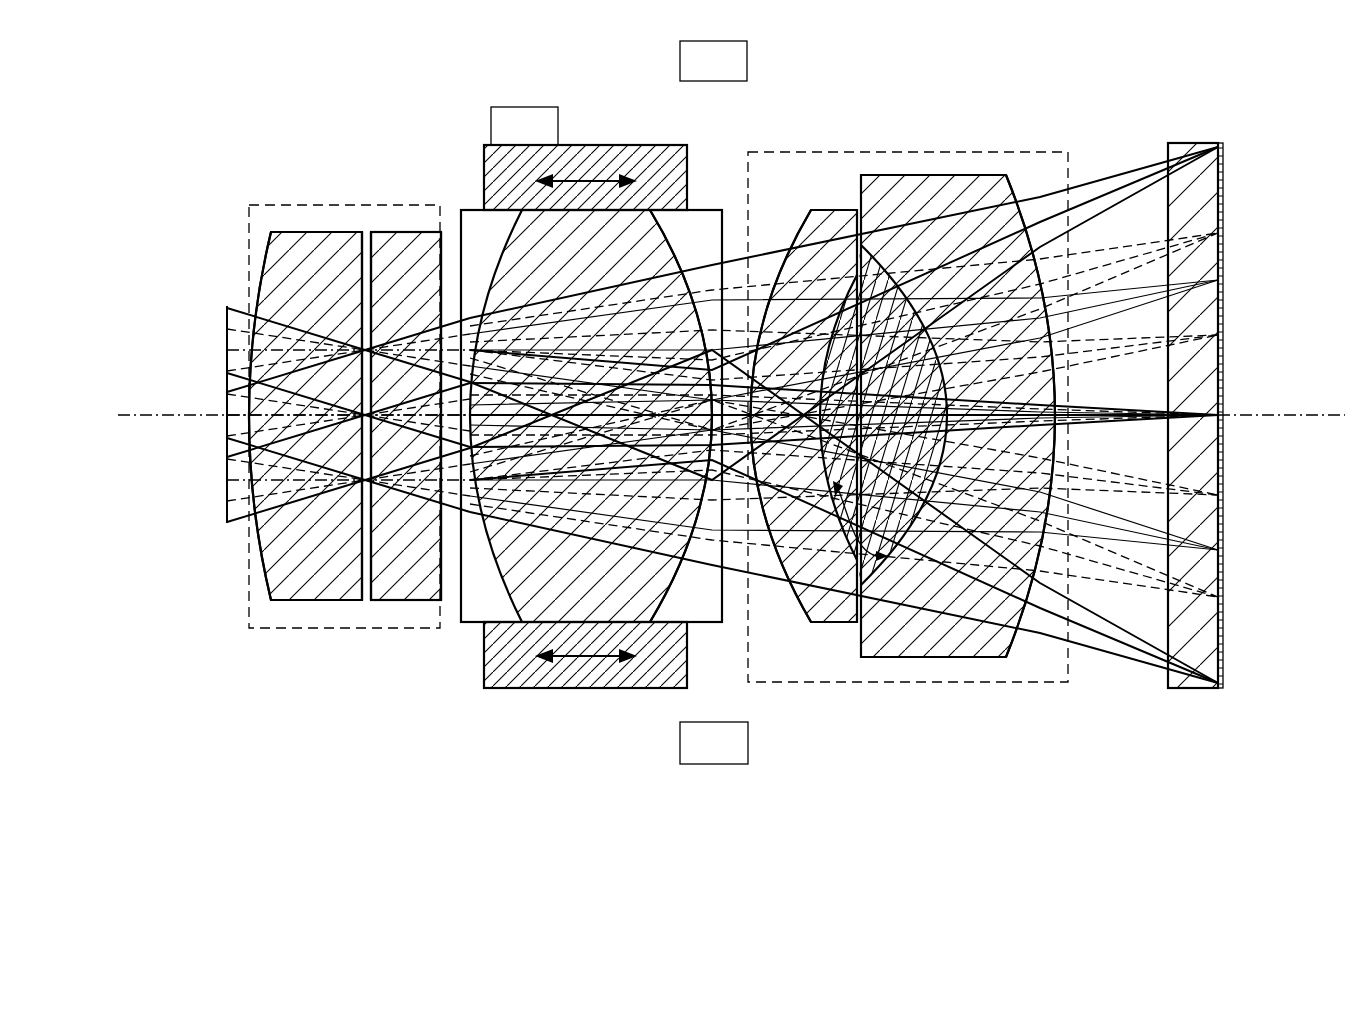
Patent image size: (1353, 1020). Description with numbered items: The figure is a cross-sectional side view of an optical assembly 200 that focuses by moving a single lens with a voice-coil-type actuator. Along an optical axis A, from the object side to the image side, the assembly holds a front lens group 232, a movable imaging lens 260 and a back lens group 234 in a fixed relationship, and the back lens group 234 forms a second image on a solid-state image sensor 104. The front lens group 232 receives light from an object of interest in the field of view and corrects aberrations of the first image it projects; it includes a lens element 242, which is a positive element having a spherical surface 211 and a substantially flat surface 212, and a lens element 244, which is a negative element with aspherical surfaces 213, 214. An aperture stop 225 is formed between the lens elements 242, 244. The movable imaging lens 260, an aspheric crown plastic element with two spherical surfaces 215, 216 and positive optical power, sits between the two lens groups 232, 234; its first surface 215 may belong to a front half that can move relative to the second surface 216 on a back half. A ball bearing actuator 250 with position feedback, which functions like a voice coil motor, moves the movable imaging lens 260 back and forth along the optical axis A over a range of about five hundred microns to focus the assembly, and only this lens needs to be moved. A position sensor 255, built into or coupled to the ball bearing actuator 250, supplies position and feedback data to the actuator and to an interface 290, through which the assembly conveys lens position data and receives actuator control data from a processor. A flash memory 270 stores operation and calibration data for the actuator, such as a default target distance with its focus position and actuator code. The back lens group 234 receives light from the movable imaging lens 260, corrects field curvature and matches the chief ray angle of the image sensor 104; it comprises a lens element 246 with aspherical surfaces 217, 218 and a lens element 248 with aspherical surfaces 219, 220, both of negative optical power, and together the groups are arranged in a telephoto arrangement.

The optical assembly 200 is at (145, 112).
The optical axis A is at (183, 413).
The image sensor 104 is at (1218, 143).
The spherical surface 211 is at (253, 279).
The substantially flat surface 212 is at (372, 592).
The aspherical surface 213 is at (387, 376).
The aspherical surface 214 is at (429, 574).
The first surface 215 is at (488, 230).
The second surface 216 is at (686, 230).
The aspherical surface 217 is at (787, 213).
The aspherical surface 218 is at (1003, 657).
The aspherical surface 219 is at (832, 615).
The aspherical surface 220 is at (1072, 446).
The aperture stop 225 is at (380, 492).
The front lens group 232 is at (330, 205).
The back lens group 234 is at (912, 152).
The lens element 242 is at (297, 577).
The lens element 244 is at (440, 605).
The lens element 246 is at (836, 605).
The lens element 248 is at (933, 620).
The ball bearing actuator 250 is at (608, 145).
The position sensor 255 is at (524, 126).
The movable imaging lens 260 is at (567, 600).
The flash memory 270 is at (713, 61).
The interface 290 is at (714, 743).